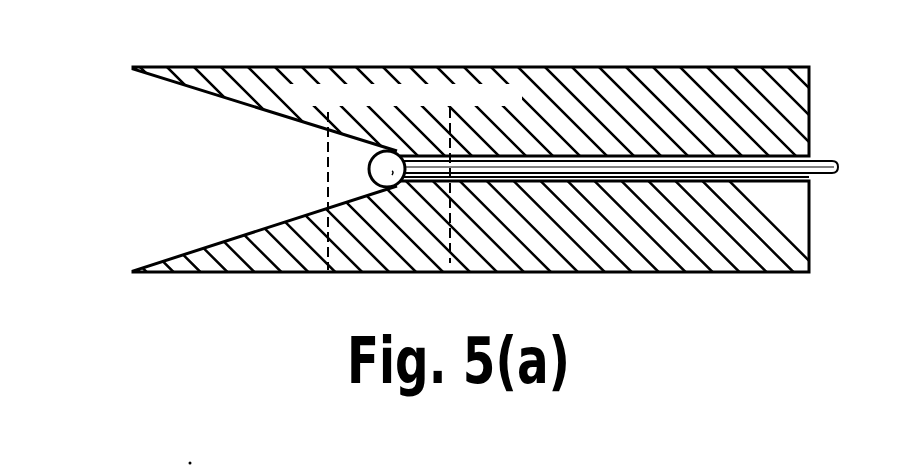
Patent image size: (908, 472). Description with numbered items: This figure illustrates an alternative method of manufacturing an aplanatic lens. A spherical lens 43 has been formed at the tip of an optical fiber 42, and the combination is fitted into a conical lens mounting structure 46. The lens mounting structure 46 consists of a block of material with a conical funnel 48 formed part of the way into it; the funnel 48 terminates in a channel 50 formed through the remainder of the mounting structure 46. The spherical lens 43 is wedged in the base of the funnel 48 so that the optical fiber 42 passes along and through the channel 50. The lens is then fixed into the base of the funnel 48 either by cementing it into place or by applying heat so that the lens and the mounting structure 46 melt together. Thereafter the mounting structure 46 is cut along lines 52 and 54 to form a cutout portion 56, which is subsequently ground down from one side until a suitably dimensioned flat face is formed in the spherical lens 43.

The optical fiber 42 is at (820, 160).
The spherical lens 43 is at (370, 172).
The lens mounting structure 46 is at (638, 262).
The conical funnel 48 is at (215, 130).
The channel 50 is at (793, 176).
The cutting line 52 is at (450, 68).
The cutting line 54 is at (328, 68).
The cutout portion 56 is at (393, 262).